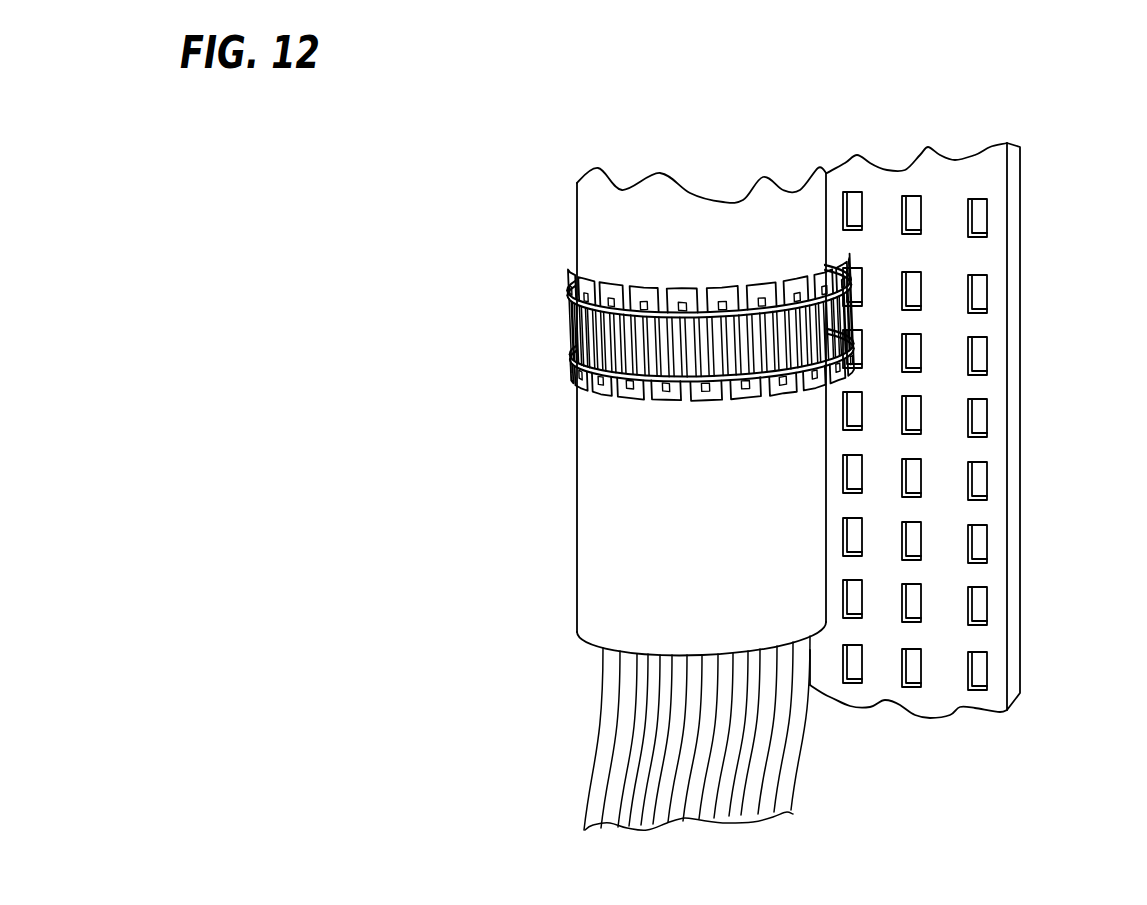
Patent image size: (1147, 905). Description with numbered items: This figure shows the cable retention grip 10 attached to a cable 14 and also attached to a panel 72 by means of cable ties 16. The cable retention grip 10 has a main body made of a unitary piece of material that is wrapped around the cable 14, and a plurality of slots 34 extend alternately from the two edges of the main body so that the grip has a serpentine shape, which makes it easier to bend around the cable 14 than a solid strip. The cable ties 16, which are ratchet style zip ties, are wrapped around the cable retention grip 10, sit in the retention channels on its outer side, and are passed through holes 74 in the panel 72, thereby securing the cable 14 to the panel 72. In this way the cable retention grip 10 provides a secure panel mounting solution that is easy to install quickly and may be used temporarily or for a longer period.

The cable retention grip 10 is at (670, 344).
The cable 14 is at (617, 511).
The cable ties 16 is at (573, 292).
The slots 34 is at (625, 380).
The panel 72 is at (967, 414).
The holes 74 is at (852, 220).